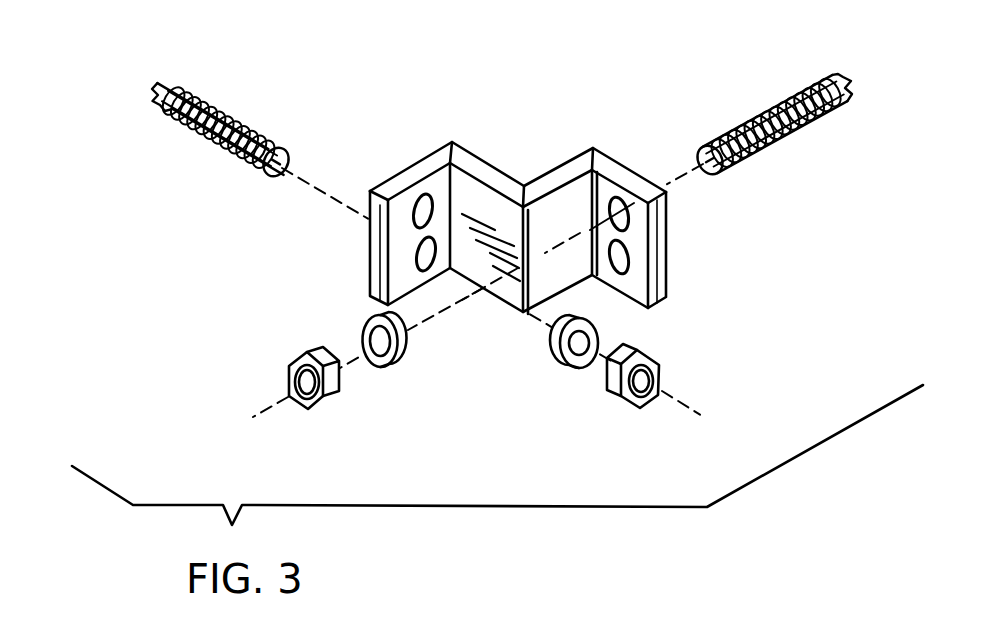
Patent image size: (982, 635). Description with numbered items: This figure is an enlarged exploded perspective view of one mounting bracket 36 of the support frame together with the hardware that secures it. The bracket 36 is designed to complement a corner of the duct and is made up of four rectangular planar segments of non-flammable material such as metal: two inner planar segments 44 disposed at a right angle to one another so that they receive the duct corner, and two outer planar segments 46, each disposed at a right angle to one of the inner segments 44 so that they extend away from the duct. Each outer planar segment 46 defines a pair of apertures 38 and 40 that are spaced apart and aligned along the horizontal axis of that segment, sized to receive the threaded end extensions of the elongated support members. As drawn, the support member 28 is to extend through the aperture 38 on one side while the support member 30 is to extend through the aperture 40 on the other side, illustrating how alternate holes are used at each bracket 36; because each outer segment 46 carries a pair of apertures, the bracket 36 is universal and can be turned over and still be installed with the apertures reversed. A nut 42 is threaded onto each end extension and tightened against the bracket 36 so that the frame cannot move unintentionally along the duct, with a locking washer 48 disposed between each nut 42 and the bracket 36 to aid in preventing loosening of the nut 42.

The elongated support member 28 is at (808, 133).
The elongated support member 30 is at (208, 100).
The mounting bracket 36 is at (509, 208).
The aperture 38 is at (422, 194).
The aperture 40 is at (380, 272).
The nut 42 is at (640, 407).
The inner planar segment 44 is at (445, 252).
The outer planar segment 46 is at (400, 238).
The locking washer 48 is at (552, 360).